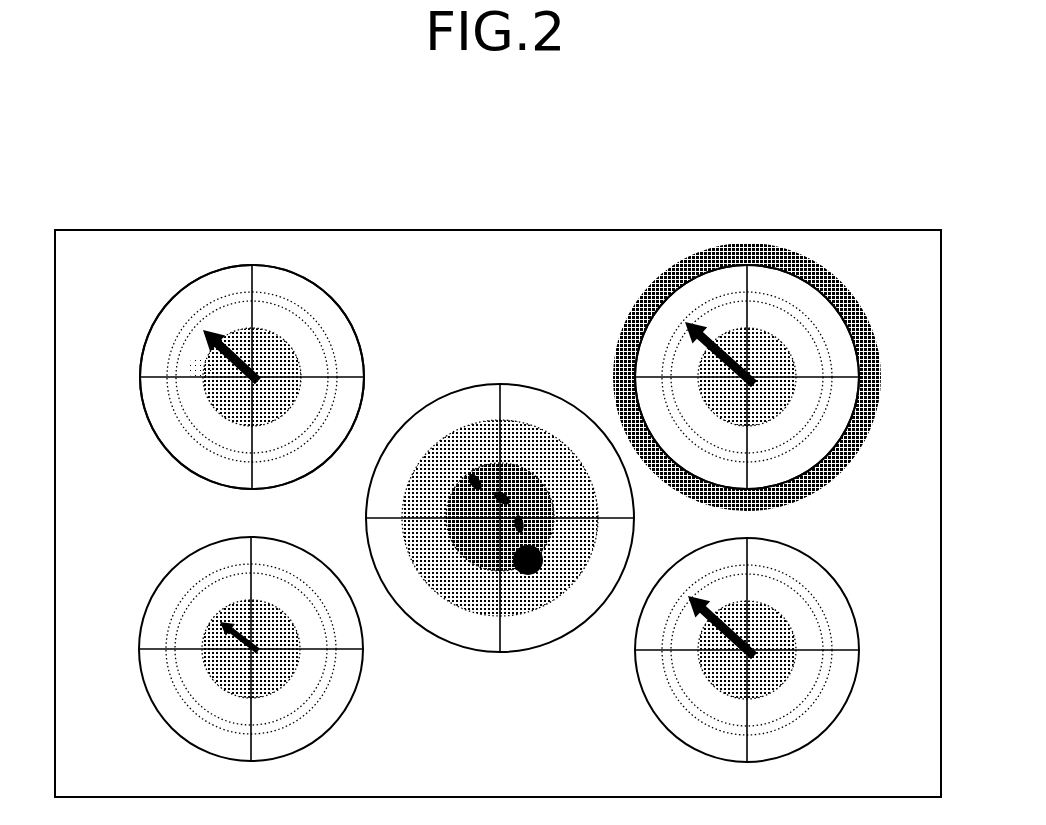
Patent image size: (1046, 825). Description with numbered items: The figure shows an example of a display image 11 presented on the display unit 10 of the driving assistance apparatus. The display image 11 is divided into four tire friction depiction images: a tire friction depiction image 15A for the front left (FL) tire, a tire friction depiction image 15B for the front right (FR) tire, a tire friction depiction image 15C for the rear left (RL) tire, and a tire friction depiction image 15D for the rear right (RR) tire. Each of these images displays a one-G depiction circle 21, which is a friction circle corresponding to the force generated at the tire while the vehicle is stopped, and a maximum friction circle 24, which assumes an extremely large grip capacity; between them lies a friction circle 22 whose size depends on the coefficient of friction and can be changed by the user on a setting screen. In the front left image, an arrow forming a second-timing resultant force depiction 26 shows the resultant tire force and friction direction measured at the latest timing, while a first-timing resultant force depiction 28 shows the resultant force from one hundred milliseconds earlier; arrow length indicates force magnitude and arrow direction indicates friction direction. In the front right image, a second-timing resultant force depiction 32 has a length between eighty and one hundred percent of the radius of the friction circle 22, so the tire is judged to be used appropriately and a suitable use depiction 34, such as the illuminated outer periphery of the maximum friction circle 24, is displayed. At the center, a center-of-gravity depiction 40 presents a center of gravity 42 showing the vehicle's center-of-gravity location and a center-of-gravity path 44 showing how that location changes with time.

The display unit 10 is at (513, 230).
The display image 11 is at (498, 513).
The tire friction depiction image 15A is at (155, 463).
The tire friction depiction image 15B is at (866, 478).
The tire friction depiction image 15C is at (357, 720).
The tire friction depiction image 15D is at (643, 736).
The 1 G depiction circle 21 is at (270, 330).
The friction circle 22 is at (320, 327).
The maximum friction circle 24 is at (365, 350).
The second-timing resultant force depiction 26 is at (202, 347).
The first-timing resultant force depiction 28 is at (197, 366).
The second-timing resultant force depiction 32 is at (684, 323).
The suitable use depiction 34 is at (618, 357).
The center-of-gravity depiction 40 is at (512, 660).
The center of gravity 42 is at (463, 470).
The center-of-gravity path 44 is at (480, 570).